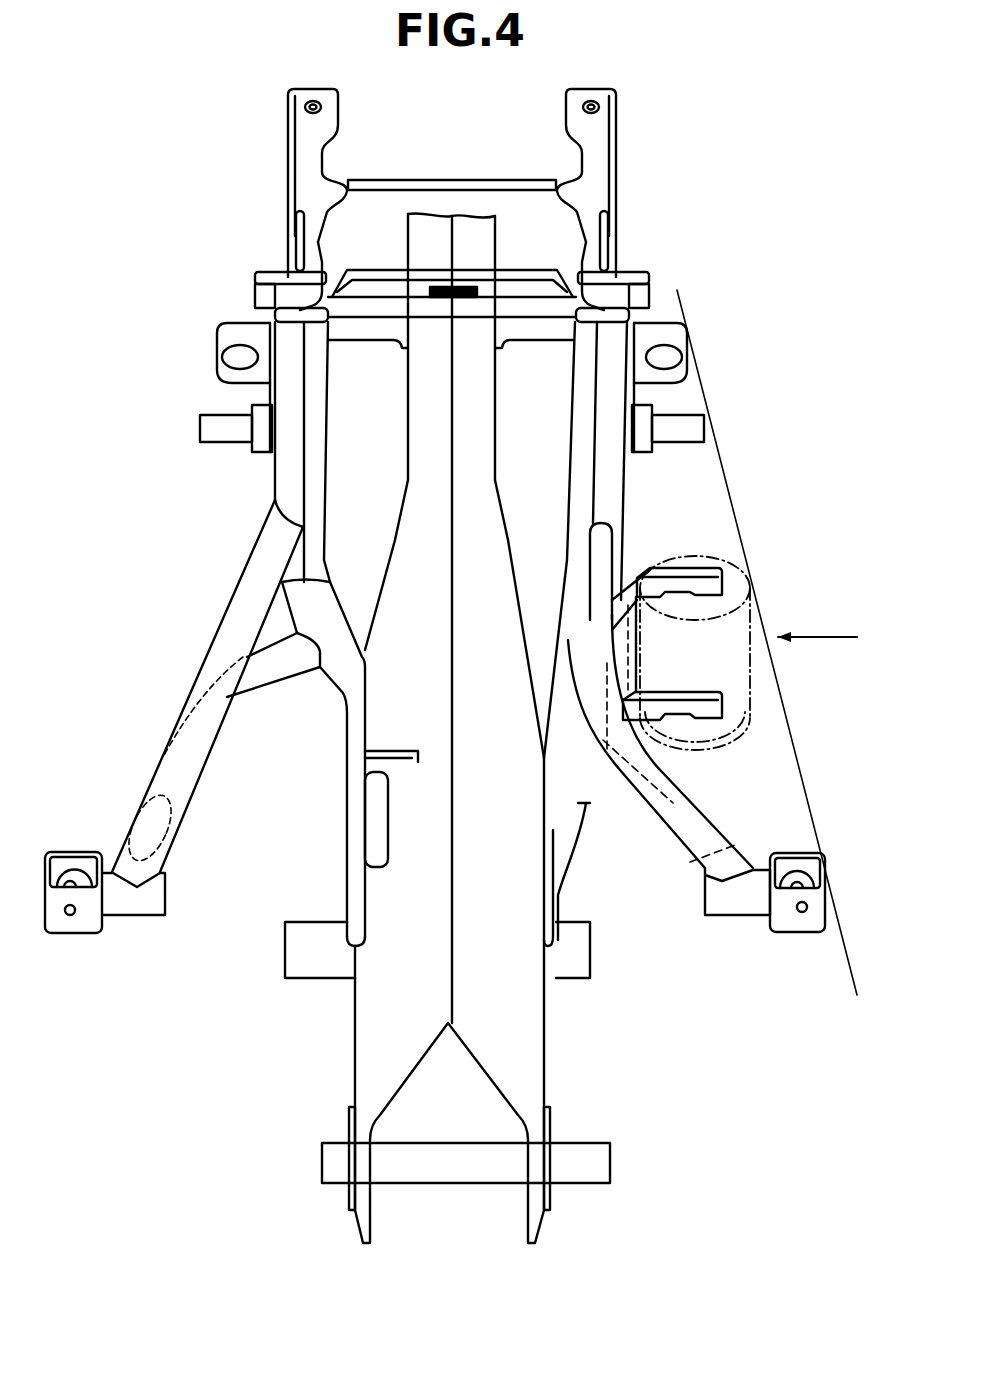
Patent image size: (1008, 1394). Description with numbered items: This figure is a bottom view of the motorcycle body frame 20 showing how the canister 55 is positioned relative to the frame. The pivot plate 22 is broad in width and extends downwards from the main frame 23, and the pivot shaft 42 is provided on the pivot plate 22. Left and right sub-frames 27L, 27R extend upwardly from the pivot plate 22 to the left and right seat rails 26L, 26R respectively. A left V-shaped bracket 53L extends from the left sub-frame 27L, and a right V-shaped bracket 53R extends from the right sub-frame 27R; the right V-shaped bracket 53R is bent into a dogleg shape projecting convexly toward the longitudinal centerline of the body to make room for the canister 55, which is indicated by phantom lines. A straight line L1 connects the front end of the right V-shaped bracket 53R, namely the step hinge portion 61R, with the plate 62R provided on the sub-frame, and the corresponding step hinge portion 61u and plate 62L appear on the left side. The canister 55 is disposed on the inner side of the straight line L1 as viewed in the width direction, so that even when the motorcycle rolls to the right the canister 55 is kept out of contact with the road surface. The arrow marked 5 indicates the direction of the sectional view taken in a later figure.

The body frame 20 is at (243, 535).
The pivot plate 22 is at (398, 905).
The main frame 23 is at (473, 233).
The left seat rail 26L is at (298, 296).
The right seat rail 26R is at (605, 298).
The left sub-frame 27L is at (332, 684).
The right sub-frame 27R is at (587, 803).
The pivot shaft 42 is at (285, 962).
The left V-shaped bracket 53L is at (193, 672).
The right V-shaped bracket 53R is at (717, 812).
The canister 55 is at (752, 667).
The left step bracket 61u is at (70, 922).
The step hinge portion 61R is at (793, 923).
The left mount bracket 62L is at (227, 338).
The plate 62R is at (683, 342).
The straight line L1 is at (730, 502).
The section view arrow 5 is at (817, 623).